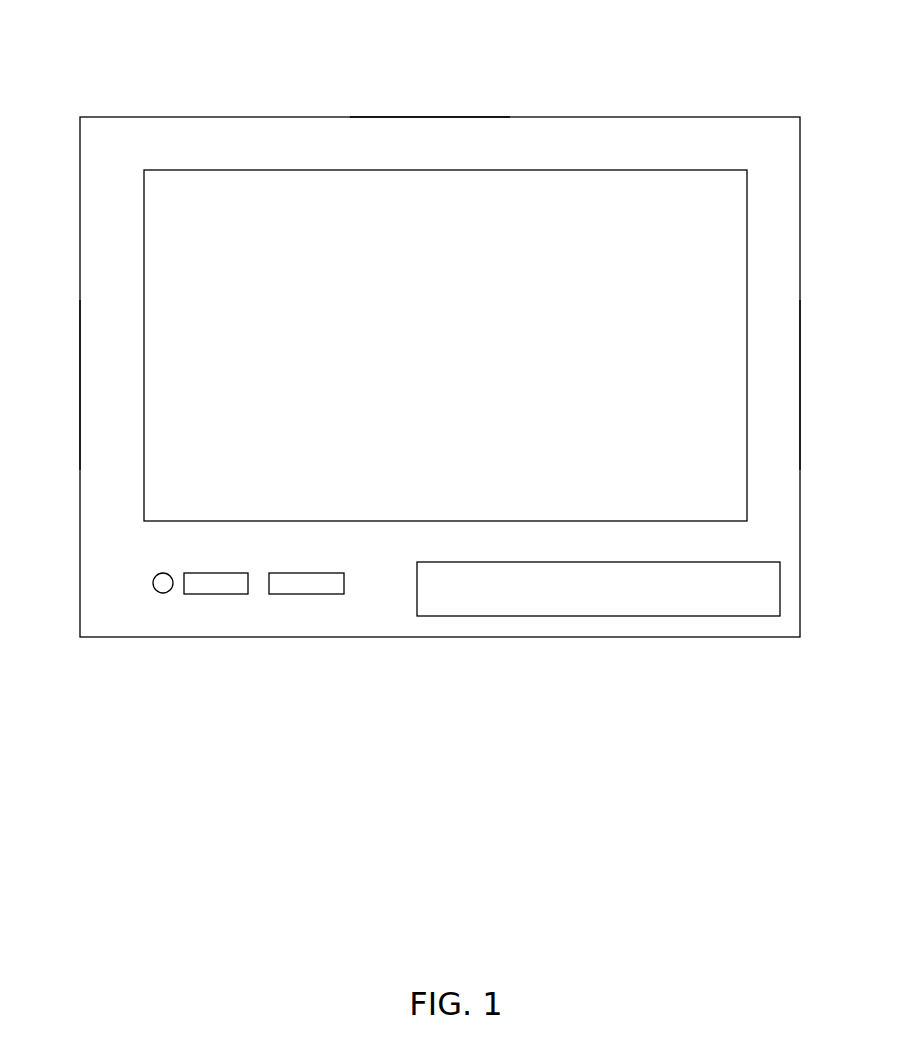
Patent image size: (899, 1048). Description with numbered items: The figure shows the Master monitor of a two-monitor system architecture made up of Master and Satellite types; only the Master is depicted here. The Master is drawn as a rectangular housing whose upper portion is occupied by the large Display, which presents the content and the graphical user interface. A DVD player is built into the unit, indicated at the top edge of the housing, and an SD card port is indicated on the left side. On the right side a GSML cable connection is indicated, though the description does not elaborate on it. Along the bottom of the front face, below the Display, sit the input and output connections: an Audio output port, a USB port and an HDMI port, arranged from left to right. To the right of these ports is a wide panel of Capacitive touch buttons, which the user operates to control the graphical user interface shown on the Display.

The SD card port SD is at (83, 258).
The DVD player DVD is at (430, 116).
The GSML cable connector GSML is at (816, 253).
The display Display is at (445, 345).
The audio output port Audio is at (162, 588).
The USB port USB is at (229, 586).
The HDMI port HDMI is at (324, 586).
The capacitive touch buttons Capacitive is at (662, 588).